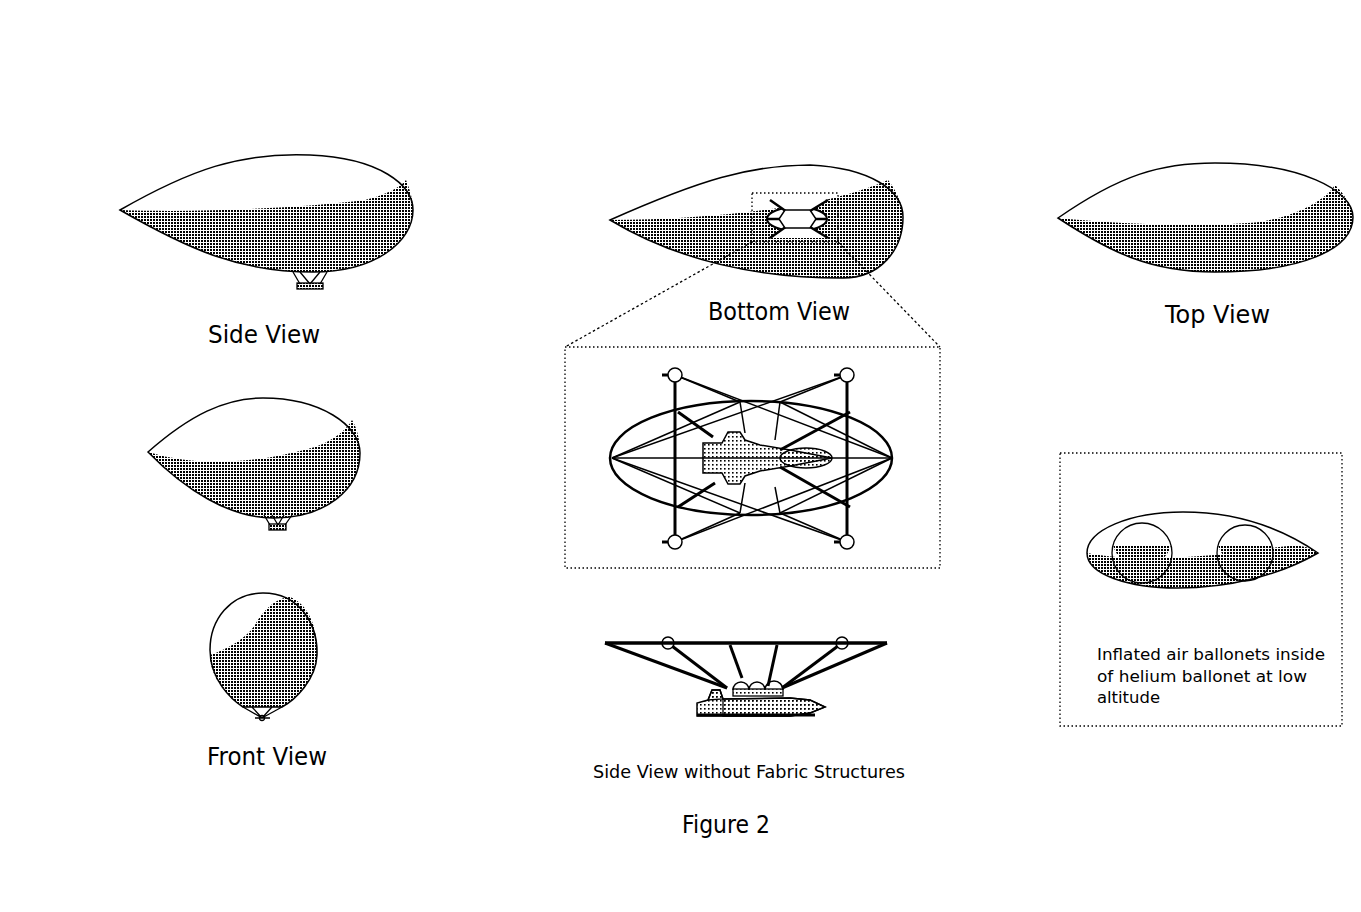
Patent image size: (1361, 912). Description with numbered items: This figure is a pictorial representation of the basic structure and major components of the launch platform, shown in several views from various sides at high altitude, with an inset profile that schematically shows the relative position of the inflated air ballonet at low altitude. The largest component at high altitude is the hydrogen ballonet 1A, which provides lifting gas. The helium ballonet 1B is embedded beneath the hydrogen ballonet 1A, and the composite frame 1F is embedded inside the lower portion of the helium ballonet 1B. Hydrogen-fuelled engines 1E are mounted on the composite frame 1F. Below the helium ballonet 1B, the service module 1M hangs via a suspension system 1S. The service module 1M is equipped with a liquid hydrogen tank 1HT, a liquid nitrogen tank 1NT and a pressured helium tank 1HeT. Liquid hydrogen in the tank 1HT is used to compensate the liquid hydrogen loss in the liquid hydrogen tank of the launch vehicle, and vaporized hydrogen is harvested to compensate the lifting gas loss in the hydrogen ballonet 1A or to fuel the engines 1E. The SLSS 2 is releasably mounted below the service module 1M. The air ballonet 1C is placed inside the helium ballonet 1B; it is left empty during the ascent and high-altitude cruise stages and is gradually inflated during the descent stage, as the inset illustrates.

The hydrogen ballonet 1A is at (736, 438).
The helium ballonet 1B is at (736, 431).
The air ballonet 1C is at (1217, 581).
The composite frame 1F is at (622, 456).
The service module 1M is at (585, 496).
The engines 1E is at (821, 508).
The suspension system 1S is at (748, 531).
The liquid hydrogen tank 1HT is at (746, 621).
The liquid nitrogen tank 1NT is at (659, 716).
The pressured helium tank 1HeT is at (746, 725).
The SLSS 2 is at (629, 471).